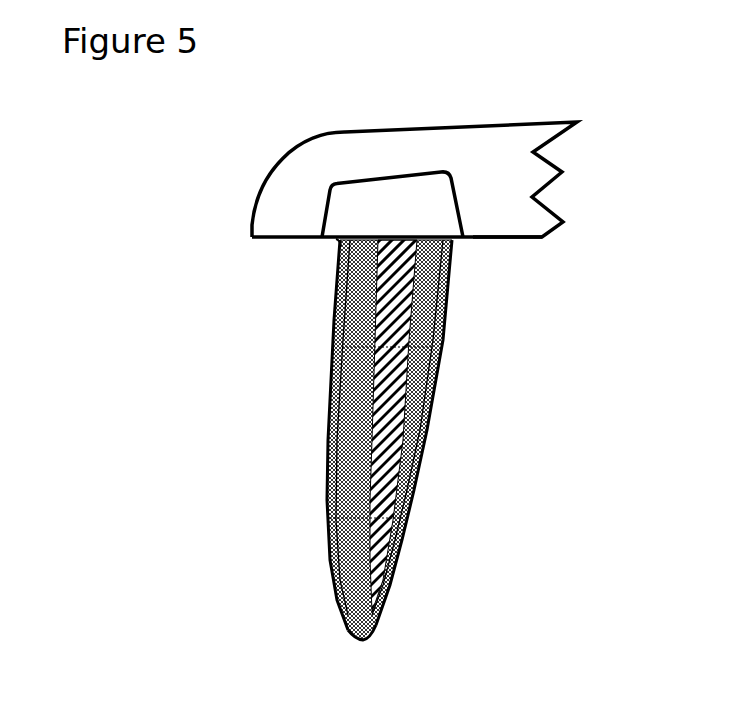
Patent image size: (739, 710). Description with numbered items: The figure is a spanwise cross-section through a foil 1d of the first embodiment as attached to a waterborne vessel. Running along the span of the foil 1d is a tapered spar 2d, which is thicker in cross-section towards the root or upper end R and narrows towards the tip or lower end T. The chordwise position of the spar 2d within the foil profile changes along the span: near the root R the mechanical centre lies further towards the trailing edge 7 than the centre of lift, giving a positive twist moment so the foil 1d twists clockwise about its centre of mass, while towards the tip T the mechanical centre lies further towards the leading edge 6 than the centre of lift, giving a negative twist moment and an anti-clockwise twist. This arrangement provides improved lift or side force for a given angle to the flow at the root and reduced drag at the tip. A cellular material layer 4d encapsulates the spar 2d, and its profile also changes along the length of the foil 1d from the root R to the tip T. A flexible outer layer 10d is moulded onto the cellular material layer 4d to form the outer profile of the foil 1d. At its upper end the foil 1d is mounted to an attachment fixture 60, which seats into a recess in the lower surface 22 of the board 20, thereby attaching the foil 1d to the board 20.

The board 20 is at (347, 162).
The lower surface 22 is at (252, 222).
The attachment fixture 60 is at (422, 188).
The root R is at (322, 257).
The foil 1d is at (312, 410).
The flexible outer layer 10d is at (333, 336).
The cellular material layer 4d is at (347, 430).
The tapered spar 2d is at (378, 398).
The trailing edge 7 is at (330, 563).
The leading edge 6 is at (403, 542).
The tip T is at (333, 612).